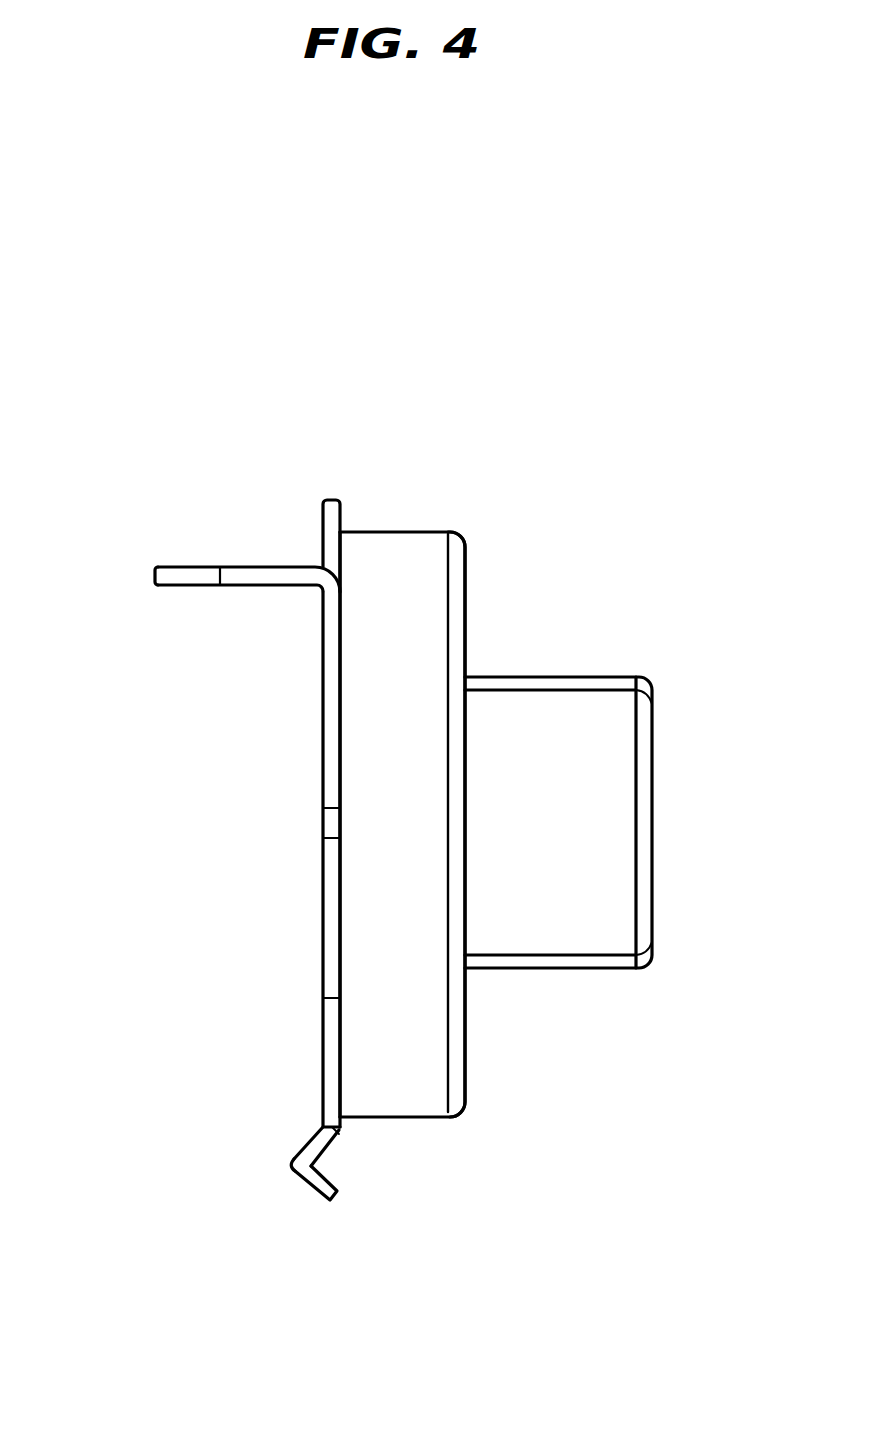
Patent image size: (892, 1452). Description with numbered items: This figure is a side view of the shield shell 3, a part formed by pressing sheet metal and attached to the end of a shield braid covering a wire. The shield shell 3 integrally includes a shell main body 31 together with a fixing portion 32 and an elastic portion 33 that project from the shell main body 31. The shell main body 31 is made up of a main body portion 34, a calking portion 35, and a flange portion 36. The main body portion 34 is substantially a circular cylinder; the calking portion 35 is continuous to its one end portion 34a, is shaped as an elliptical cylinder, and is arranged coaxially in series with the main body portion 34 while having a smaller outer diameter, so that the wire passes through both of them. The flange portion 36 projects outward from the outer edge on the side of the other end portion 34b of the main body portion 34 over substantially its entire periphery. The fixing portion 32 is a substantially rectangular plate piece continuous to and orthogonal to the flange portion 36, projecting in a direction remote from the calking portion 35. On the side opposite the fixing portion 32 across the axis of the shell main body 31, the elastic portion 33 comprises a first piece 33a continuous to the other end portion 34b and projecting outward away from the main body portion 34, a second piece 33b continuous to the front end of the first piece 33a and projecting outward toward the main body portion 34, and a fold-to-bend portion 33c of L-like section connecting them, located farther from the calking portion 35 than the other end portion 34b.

The shield shell 3 is at (492, 316).
The shell main body 31 is at (476, 521).
The fixing portion 32 is at (257, 567).
The elastic portion 33 is at (300, 1151).
The first piece 33a is at (308, 1142).
The second piece 33b is at (308, 1190).
The fold-to-bend portion 33c is at (293, 1170).
The main body portion 34 is at (403, 531).
The one end portion 34a is at (457, 608).
The other end portion 34b is at (353, 633).
The calking portion 35 is at (567, 677).
The flange portion 36 is at (318, 512).